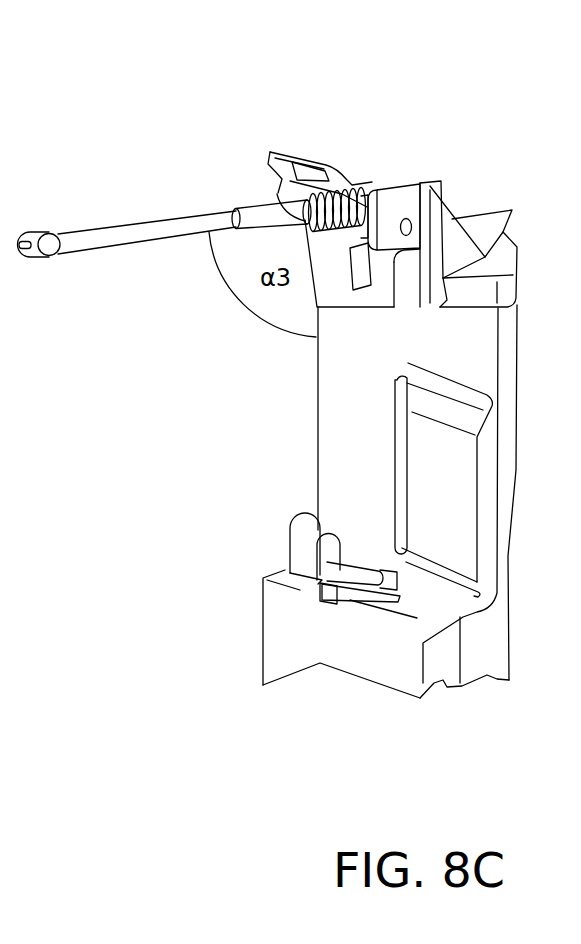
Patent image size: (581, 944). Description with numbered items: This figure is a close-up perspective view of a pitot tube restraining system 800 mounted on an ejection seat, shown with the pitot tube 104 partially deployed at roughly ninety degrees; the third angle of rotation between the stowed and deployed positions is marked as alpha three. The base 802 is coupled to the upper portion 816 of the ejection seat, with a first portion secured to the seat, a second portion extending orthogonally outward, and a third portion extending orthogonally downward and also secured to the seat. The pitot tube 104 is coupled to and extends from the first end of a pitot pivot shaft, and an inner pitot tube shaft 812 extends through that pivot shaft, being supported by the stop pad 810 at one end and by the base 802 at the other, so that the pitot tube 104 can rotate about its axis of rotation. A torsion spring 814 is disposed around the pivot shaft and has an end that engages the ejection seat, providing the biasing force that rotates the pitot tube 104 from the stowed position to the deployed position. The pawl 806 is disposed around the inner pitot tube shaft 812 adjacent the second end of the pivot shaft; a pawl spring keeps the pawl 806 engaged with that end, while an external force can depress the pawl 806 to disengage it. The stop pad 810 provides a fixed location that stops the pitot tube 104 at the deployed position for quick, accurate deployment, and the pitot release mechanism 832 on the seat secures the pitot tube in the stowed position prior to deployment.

The pitot tube restraining system 800 is at (194, 130).
The pitot tube 104 is at (90, 236).
The stop pad 810 is at (293, 150).
The torsion spring 814 is at (320, 216).
The pawl 806 is at (383, 197).
The base 802 is at (418, 192).
The upper portion of ejection seat 816 is at (483, 272).
The inner pitot tube shaft 812 is at (258, 459).
The pitot release mechanism 832 is at (295, 545).